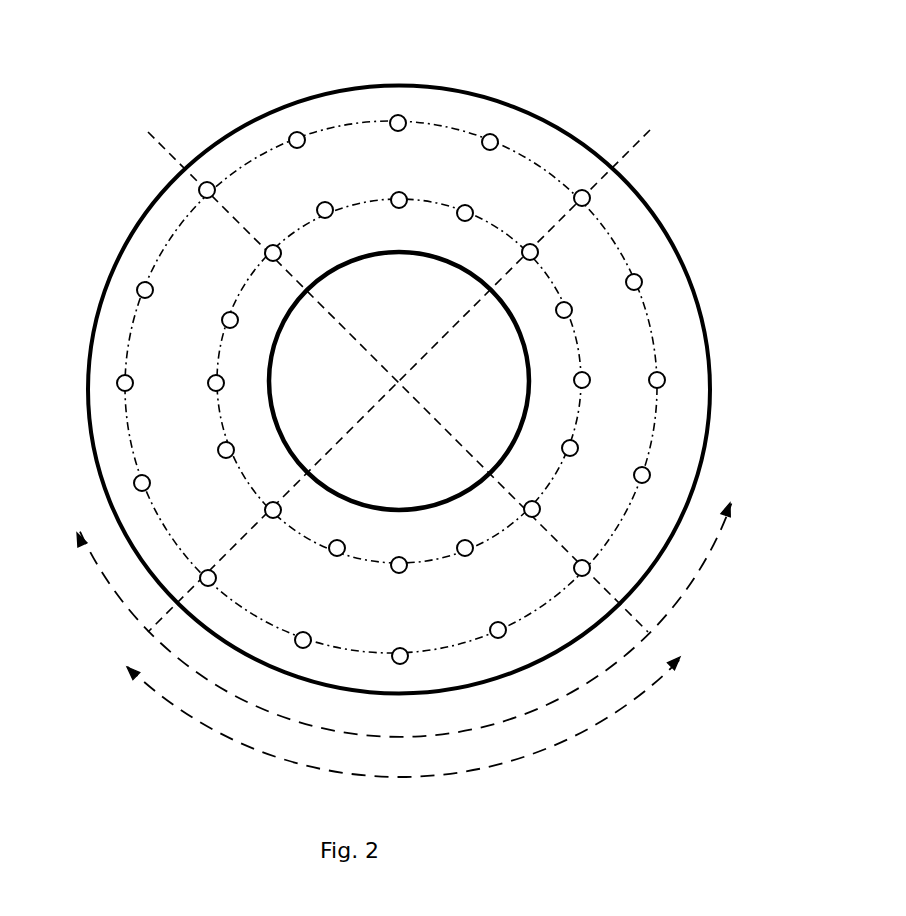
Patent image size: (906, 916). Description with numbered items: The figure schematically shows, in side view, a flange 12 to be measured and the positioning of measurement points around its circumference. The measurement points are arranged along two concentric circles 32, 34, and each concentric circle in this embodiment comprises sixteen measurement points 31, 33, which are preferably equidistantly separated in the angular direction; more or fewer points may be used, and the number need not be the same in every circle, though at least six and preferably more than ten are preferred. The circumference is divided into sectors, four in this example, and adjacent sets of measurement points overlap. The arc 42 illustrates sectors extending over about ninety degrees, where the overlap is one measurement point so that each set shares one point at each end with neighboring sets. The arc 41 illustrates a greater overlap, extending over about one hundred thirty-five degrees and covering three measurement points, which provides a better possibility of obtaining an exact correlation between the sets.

The flange 12 is at (635, 222).
The measurement points 31 is at (398, 115).
The concentric circle 32 is at (343, 121).
The measurement points 33 is at (225, 313).
The concentric circle 34 is at (222, 348).
The arc 41 is at (682, 592).
The arc 42 is at (628, 697).